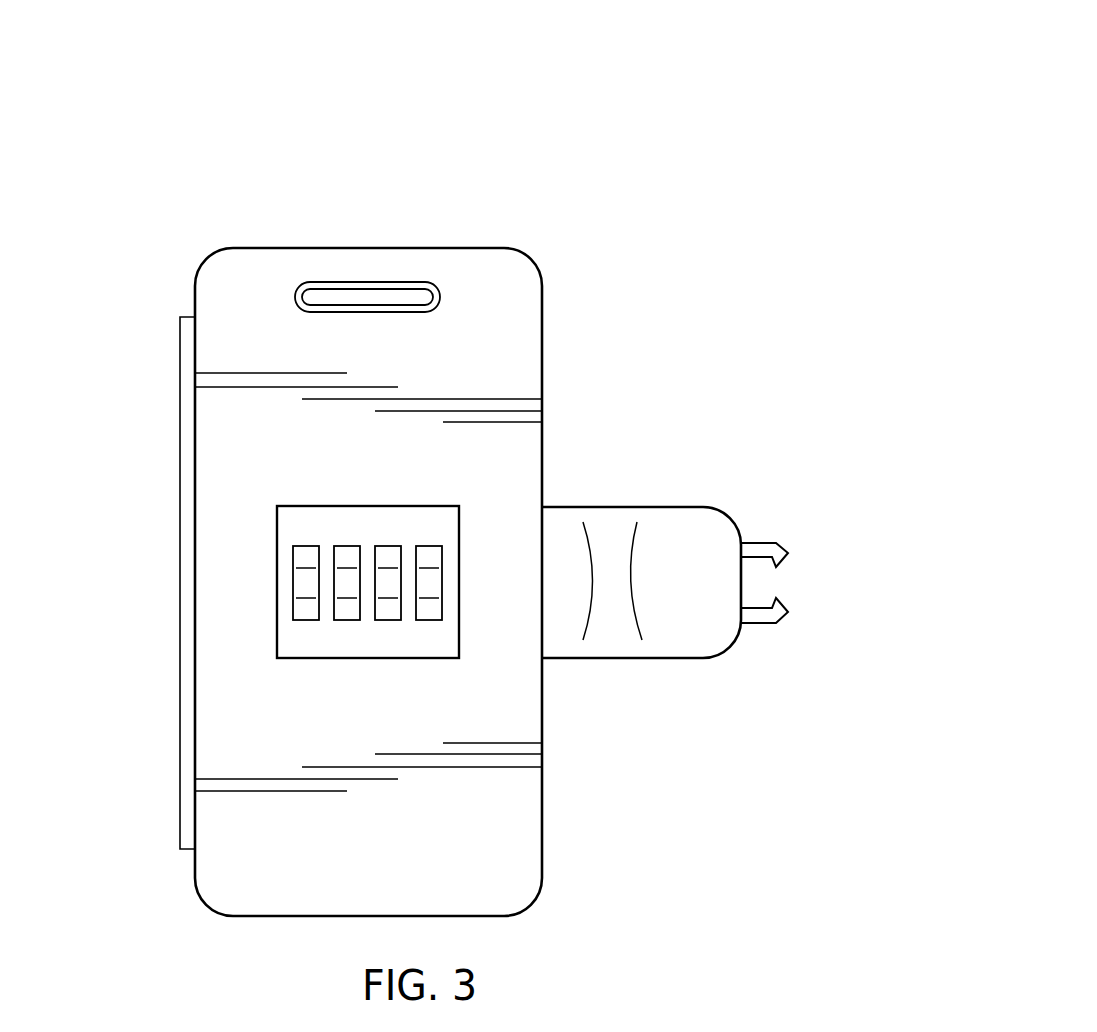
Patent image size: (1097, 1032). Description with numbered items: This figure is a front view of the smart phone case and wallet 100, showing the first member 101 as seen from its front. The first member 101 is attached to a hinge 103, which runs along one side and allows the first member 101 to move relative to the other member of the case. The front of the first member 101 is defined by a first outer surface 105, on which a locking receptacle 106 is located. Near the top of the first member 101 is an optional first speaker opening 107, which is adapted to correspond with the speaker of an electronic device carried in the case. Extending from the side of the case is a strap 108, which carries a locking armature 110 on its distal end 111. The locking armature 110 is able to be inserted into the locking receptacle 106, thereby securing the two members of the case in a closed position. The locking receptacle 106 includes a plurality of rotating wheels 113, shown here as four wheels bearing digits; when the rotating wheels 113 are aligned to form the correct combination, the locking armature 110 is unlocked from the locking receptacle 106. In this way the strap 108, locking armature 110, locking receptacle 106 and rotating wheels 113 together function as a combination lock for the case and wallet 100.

The smart phone case and wallet 100 is at (648, 127).
The first member 101 is at (207, 261).
The hinge 103 is at (187, 368).
The first outer surface 105 is at (223, 433).
The locking receptacle 106 is at (283, 520).
The first speaker opening 107 is at (371, 282).
The strap 108 is at (637, 507).
The locking armature 110 is at (777, 543).
The distal end 111 is at (741, 582).
The plurality of rotating wheels 113 is at (297, 580).